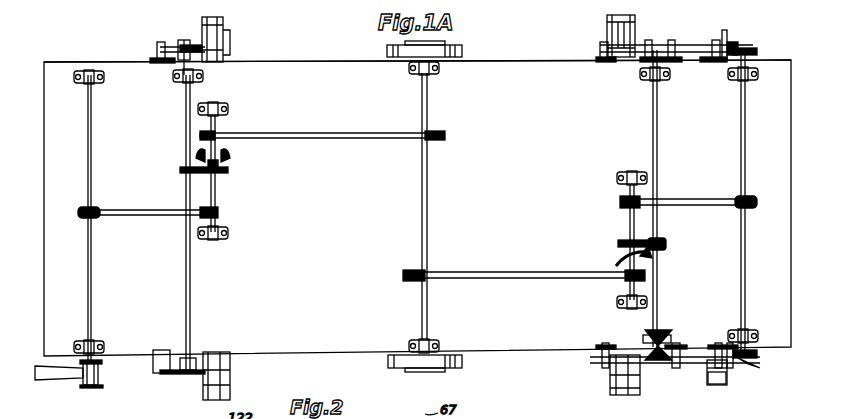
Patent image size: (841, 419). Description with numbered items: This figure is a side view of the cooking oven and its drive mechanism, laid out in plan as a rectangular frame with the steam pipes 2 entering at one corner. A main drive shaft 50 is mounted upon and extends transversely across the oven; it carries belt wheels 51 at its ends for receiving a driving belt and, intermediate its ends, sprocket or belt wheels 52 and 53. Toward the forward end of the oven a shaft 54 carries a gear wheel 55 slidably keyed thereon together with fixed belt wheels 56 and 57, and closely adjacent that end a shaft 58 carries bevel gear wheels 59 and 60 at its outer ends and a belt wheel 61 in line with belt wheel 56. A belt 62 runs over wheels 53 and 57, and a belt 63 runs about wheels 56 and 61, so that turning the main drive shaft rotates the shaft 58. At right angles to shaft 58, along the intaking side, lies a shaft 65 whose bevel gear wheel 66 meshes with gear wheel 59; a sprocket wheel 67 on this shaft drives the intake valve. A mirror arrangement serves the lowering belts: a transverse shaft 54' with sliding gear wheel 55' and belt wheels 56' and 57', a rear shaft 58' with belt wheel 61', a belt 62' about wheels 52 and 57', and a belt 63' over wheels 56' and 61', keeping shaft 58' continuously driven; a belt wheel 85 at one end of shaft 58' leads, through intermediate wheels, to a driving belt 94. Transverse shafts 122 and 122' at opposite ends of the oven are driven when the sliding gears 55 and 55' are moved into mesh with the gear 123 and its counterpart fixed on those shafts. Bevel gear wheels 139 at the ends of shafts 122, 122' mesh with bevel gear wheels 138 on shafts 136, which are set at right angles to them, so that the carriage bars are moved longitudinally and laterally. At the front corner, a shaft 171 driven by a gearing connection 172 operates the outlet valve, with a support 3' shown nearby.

The steam pipes 2 is at (66, 374).
The support 3' is at (715, 395).
The main drive shaft 50 is at (428, 110).
The belt wheels 51 is at (405, 50).
The sprocket or belt wheel 52 is at (434, 140).
The sprocket or belt wheel 53 is at (428, 272).
The shaft 54 is at (604, 242).
The transverse shaft 54' is at (235, 173).
The gear wheel 55 is at (627, 245).
The sliding gear wheel 55' is at (220, 161).
The belt wheel 56 is at (611, 176).
The belt wheel 56' is at (229, 224).
The belt wheel 57 is at (608, 301).
The belt wheel 57' is at (229, 114).
The shaft 58 is at (751, 202).
The shaft 58' is at (81, 217).
The bevel gear wheel 59 is at (752, 50).
The bevel gear wheel 60 is at (752, 360).
The belt wheel 61 is at (755, 192).
The belt wheel 61' is at (79, 203).
The belt 62 is at (524, 267).
The belt 62' is at (322, 126).
The belt 63 is at (688, 193).
The belt 63' is at (149, 205).
The shaft 65 is at (692, 45).
The bevel gear wheel 66 is at (734, 44).
The sprocket wheel 67 is at (724, 30).
The belt wheel 85 is at (100, 366).
The driving belt 94 is at (98, 388).
The transverse shaft 122 is at (670, 198).
The transverse shaft 122' is at (208, 220).
The gear 123 is at (666, 244).
The shafts 136 is at (180, 46).
The bevel gear wheels 138 is at (676, 368).
The bevel gear wheels 139 is at (190, 355).
The shaft 171 is at (680, 348).
The gearing connection 172 is at (740, 370).